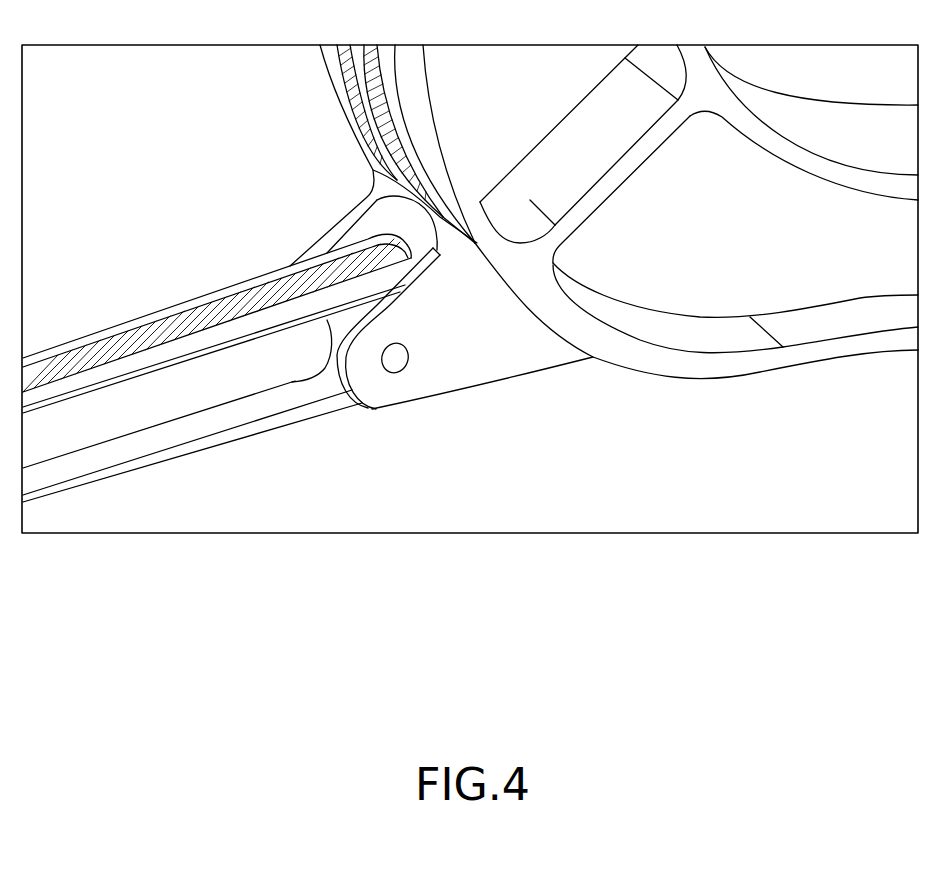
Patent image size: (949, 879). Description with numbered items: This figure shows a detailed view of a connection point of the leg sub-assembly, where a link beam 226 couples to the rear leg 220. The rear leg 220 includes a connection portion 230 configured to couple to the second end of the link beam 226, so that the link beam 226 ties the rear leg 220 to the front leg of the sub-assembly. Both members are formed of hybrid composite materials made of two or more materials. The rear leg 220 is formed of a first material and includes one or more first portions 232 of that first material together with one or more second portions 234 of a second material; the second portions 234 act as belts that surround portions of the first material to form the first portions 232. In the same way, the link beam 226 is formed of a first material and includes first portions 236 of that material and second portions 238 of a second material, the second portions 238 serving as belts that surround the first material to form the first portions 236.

The rear leg 220 is at (808, 392).
The link beam 226 is at (147, 305).
The connection portion 230 is at (463, 373).
The first portions 232 is at (335, 68).
The second portions 234 is at (373, 135).
The first portions 236 is at (297, 290).
The second portions 238 is at (246, 314).